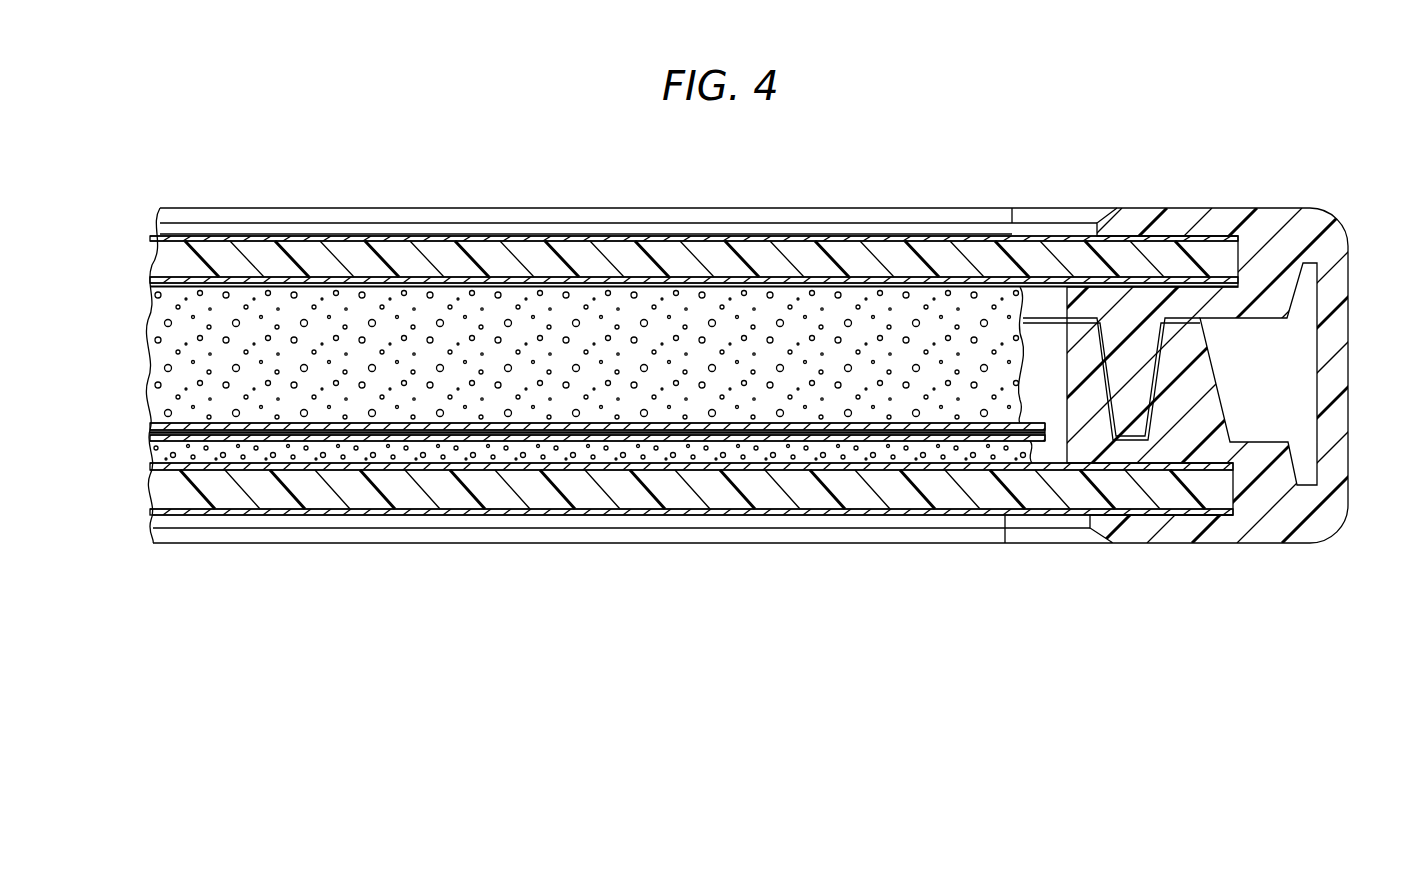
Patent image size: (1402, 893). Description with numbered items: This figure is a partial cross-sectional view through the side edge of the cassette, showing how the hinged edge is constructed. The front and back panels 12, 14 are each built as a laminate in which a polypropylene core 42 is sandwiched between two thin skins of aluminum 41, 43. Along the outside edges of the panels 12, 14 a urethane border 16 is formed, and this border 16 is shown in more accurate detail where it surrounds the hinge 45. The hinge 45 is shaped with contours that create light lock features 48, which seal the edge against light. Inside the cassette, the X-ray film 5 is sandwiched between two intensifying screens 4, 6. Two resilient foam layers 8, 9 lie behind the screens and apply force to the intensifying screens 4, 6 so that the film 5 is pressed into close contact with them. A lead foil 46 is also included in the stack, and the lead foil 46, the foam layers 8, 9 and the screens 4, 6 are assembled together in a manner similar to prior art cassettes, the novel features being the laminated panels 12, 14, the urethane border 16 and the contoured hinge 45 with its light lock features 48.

The intensifying screen 4 is at (570, 423).
The X-ray film 5 is at (445, 432).
The intensifying screen 6 is at (647, 437).
The resilient foam layer 8 is at (172, 358).
The resilient foam layer 9 is at (153, 455).
The front panel 12 is at (200, 546).
The back panel 14 is at (222, 207).
The urethane border 16 is at (1220, 220).
The aluminum skin 41 is at (322, 241).
The polypropylene core 42 is at (396, 250).
The aluminum skin 43 is at (456, 282).
The hinge 45 is at (1327, 378).
The lead foil 46 is at (170, 288).
The light lock feature 48 is at (1157, 373).